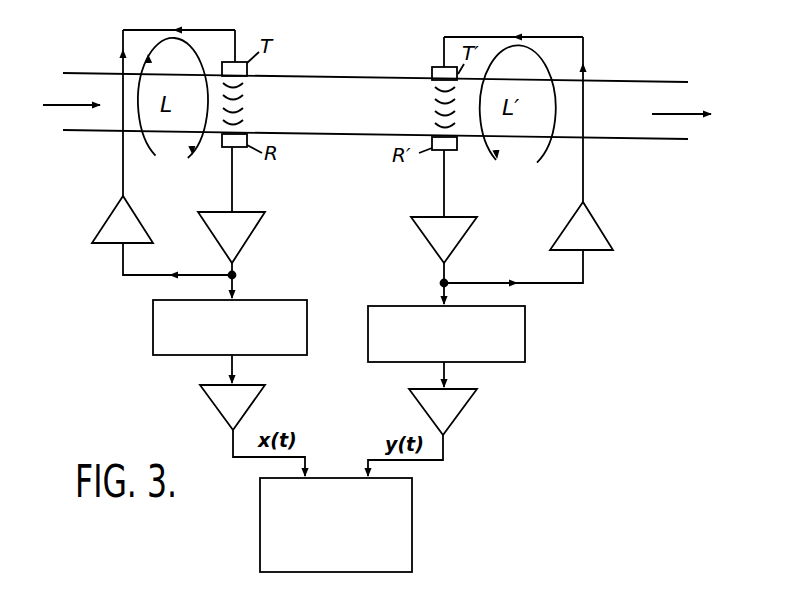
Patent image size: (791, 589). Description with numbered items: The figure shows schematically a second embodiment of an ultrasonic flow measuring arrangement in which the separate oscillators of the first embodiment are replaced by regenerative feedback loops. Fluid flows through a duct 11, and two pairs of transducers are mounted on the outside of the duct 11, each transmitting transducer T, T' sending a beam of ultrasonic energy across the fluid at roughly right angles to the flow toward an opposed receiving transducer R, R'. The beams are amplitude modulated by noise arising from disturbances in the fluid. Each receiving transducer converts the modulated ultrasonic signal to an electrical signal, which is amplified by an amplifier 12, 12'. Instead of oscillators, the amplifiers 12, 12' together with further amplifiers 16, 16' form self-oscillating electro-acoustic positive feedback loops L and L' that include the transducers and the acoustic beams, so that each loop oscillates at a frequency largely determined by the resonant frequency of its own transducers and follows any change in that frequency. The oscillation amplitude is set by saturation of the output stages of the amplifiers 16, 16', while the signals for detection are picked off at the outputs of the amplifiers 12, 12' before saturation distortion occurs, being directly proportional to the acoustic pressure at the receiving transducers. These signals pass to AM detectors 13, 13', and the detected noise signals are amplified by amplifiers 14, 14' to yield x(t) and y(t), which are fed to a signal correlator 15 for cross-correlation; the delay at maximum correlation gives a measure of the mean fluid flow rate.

The duct 11 is at (626, 81).
The amplifier 12 is at (245, 213).
The amplifier 12' is at (460, 218).
The AM detector 13 is at (211, 327).
The AM detector 13' is at (473, 334).
The amplifier 14 is at (240, 430).
The amplifier 14' is at (443, 432).
The signal correlator 15 is at (260, 509).
The amplifier 16 is at (163, 152).
The amplifier 16' is at (542, 160).